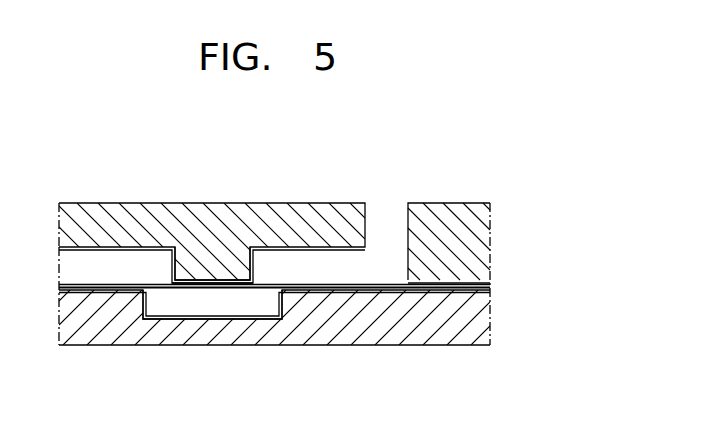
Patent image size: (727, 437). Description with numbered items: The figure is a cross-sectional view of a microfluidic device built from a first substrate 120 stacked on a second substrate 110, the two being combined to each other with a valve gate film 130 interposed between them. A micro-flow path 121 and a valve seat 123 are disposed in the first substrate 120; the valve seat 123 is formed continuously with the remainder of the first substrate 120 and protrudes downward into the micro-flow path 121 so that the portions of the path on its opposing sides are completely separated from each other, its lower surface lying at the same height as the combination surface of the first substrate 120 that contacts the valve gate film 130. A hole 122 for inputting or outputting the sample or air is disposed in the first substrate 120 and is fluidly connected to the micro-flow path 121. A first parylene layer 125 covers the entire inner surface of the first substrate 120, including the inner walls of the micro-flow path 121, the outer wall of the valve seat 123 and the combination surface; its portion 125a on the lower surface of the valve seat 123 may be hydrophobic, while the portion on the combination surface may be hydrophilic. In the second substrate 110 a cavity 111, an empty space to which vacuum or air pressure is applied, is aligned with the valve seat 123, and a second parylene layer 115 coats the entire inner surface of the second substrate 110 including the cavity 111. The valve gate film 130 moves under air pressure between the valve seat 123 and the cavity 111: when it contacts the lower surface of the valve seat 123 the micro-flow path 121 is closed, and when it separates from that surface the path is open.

The second substrate 110 is at (483, 331).
The cavity 111 is at (197, 307).
The second parylene layer 115 is at (476, 293).
The first substrate 120 is at (270, 217).
The micro-flow path 121 is at (110, 262).
The hole 122 is at (388, 218).
The valve seat 123 is at (184, 265).
The first parylene layer 125 is at (352, 246).
The portion of the first parylene layer 125a is at (219, 281).
The valve gate film 130 is at (484, 287).